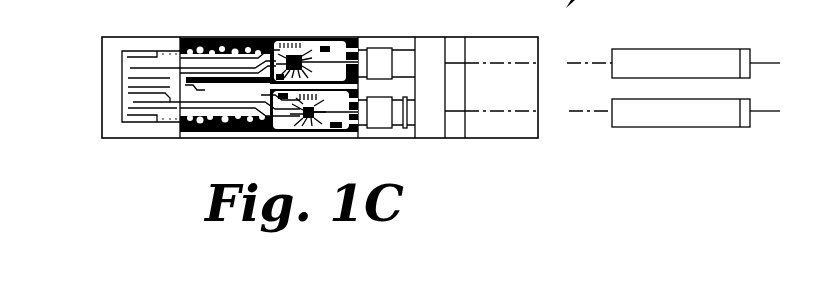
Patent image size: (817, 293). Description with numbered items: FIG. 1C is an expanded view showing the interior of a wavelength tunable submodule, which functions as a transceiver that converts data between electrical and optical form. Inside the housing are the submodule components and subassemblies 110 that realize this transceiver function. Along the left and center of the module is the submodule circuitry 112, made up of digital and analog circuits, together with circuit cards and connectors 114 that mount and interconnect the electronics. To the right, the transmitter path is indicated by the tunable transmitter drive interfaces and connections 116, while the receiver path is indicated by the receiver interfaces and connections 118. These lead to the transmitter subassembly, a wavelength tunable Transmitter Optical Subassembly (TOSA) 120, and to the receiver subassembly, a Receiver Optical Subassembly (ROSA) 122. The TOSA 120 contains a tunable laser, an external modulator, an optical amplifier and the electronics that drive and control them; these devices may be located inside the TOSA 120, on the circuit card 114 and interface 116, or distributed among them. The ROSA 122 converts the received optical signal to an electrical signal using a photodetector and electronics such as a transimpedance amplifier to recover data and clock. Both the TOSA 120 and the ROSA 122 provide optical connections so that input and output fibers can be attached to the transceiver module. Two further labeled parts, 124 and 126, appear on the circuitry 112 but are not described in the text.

The submodule components and subassemblies 110 is at (141, 152).
The submodule circuitry 112 is at (265, 86).
The circuit cards and connectors 114 is at (358, 138).
The tunable transmitter drive interfaces and connections 116 is at (556, 50).
The receiver interfaces and connections 118 is at (557, 130).
The Transmitter Optical Subassembly (TOSA) 120 is at (660, 49).
The Receiver Optical Subassembly (ROSA) 122 is at (665, 127).
The transmitter chip 124 is at (244, 40).
The receiver chip 126 is at (325, 64).